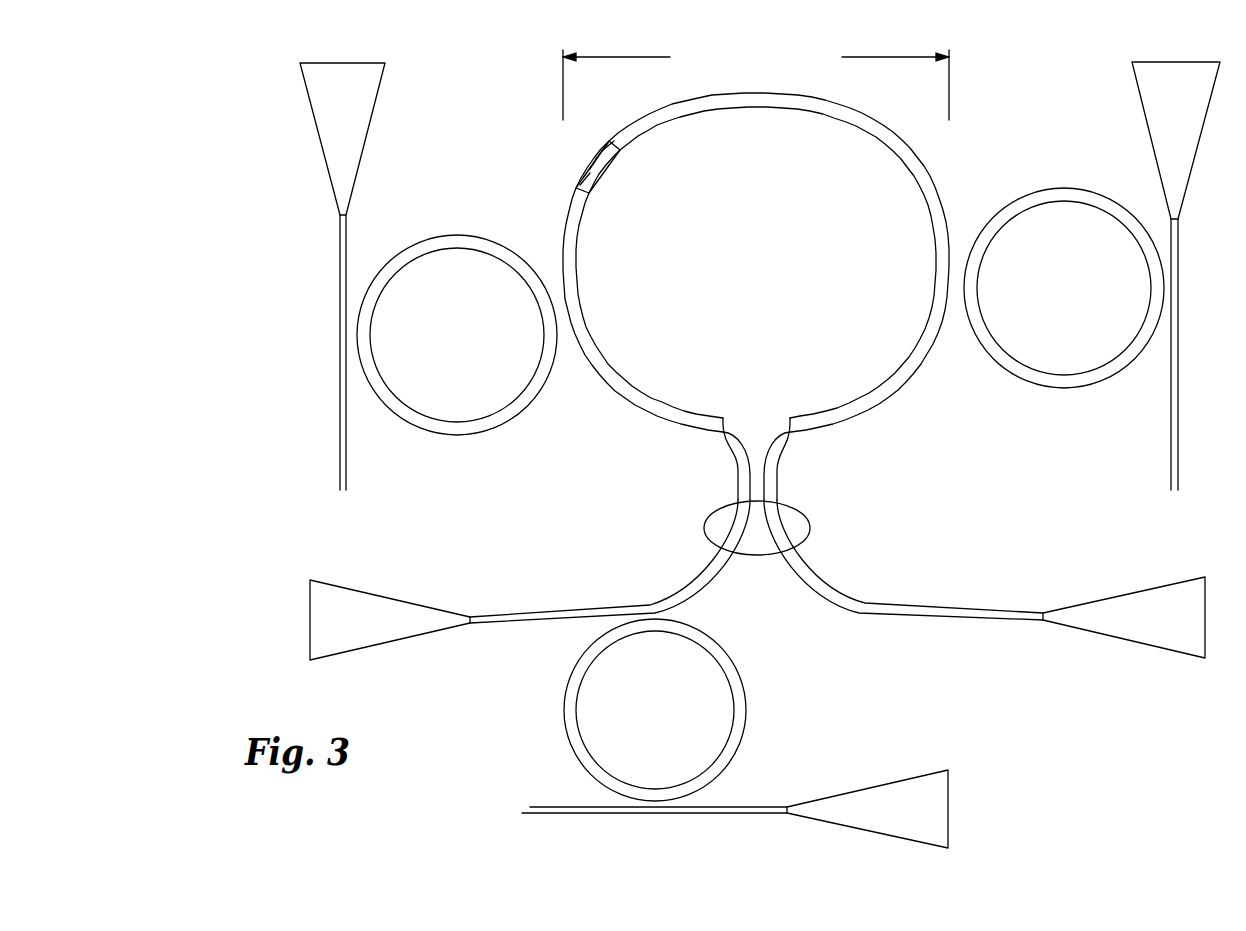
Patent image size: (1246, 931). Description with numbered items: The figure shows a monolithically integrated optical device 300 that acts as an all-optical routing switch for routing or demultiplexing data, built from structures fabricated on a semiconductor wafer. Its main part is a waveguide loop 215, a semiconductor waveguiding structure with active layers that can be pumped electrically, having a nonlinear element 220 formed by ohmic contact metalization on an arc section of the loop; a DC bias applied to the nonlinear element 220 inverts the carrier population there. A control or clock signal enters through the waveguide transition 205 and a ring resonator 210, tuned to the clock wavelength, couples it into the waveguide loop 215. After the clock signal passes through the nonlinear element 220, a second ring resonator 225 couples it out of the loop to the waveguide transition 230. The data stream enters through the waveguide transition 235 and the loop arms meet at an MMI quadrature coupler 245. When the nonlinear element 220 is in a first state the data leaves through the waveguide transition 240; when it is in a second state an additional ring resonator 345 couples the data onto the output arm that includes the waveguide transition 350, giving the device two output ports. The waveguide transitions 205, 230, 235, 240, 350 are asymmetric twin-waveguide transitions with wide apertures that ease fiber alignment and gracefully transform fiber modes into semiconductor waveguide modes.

The monolithically integrated optical device 300 is at (253, 102).
The waveguide transition 205 is at (1142, 102).
The ring resonator 210 is at (1064, 388).
The waveguide loop 215 is at (931, 178).
The nonlinear element 220 is at (579, 191).
The second ring resonator 225 is at (457, 435).
The waveguide transition 230 is at (321, 144).
The waveguide transition 235 is at (392, 599).
The waveguide transition 240 is at (1120, 596).
The MMI quadrature coupler 245 is at (810, 528).
The ring resonator 345 is at (747, 710).
The waveguide transition 350 is at (950, 787).